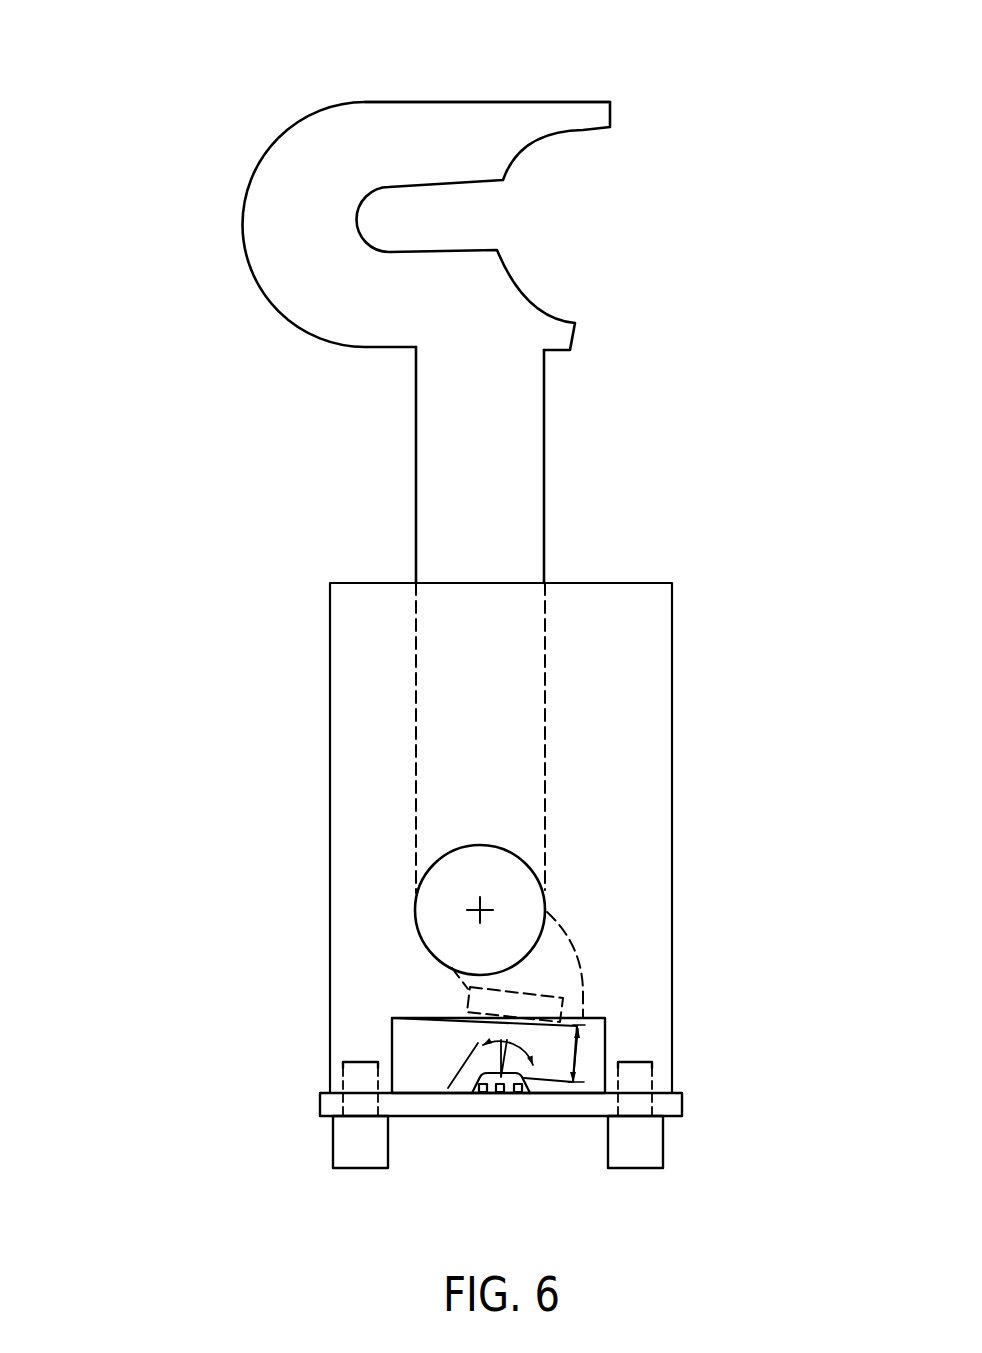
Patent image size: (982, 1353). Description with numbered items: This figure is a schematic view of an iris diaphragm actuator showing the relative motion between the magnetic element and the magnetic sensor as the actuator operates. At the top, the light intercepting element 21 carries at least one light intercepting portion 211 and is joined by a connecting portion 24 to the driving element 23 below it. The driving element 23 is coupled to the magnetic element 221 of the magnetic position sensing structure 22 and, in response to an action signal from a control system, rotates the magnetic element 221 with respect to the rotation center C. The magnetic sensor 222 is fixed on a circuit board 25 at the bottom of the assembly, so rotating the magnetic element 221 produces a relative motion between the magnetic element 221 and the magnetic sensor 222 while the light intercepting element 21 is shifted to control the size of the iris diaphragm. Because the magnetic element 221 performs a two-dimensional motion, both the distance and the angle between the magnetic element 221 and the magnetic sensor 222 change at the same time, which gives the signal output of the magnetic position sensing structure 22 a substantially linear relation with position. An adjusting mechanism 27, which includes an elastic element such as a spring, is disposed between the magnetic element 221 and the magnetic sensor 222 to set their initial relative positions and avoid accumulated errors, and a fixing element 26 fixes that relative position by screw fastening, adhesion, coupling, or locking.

The light intercepting element 21 is at (208, 207).
The light intercepting portion 211 is at (400, 110).
The connecting portion 24 is at (538, 480).
The driving element 23 is at (417, 905).
The rotation center C is at (485, 905).
The magnetic element 221 is at (583, 1007).
The magnetic position sensing structure 22 is at (442, 1032).
The magnetic sensor 222 is at (503, 1094).
The circuit board 25 is at (422, 1110).
The fixing element 26 is at (658, 1150).
The adjusting mechanism 27 is at (636, 1076).